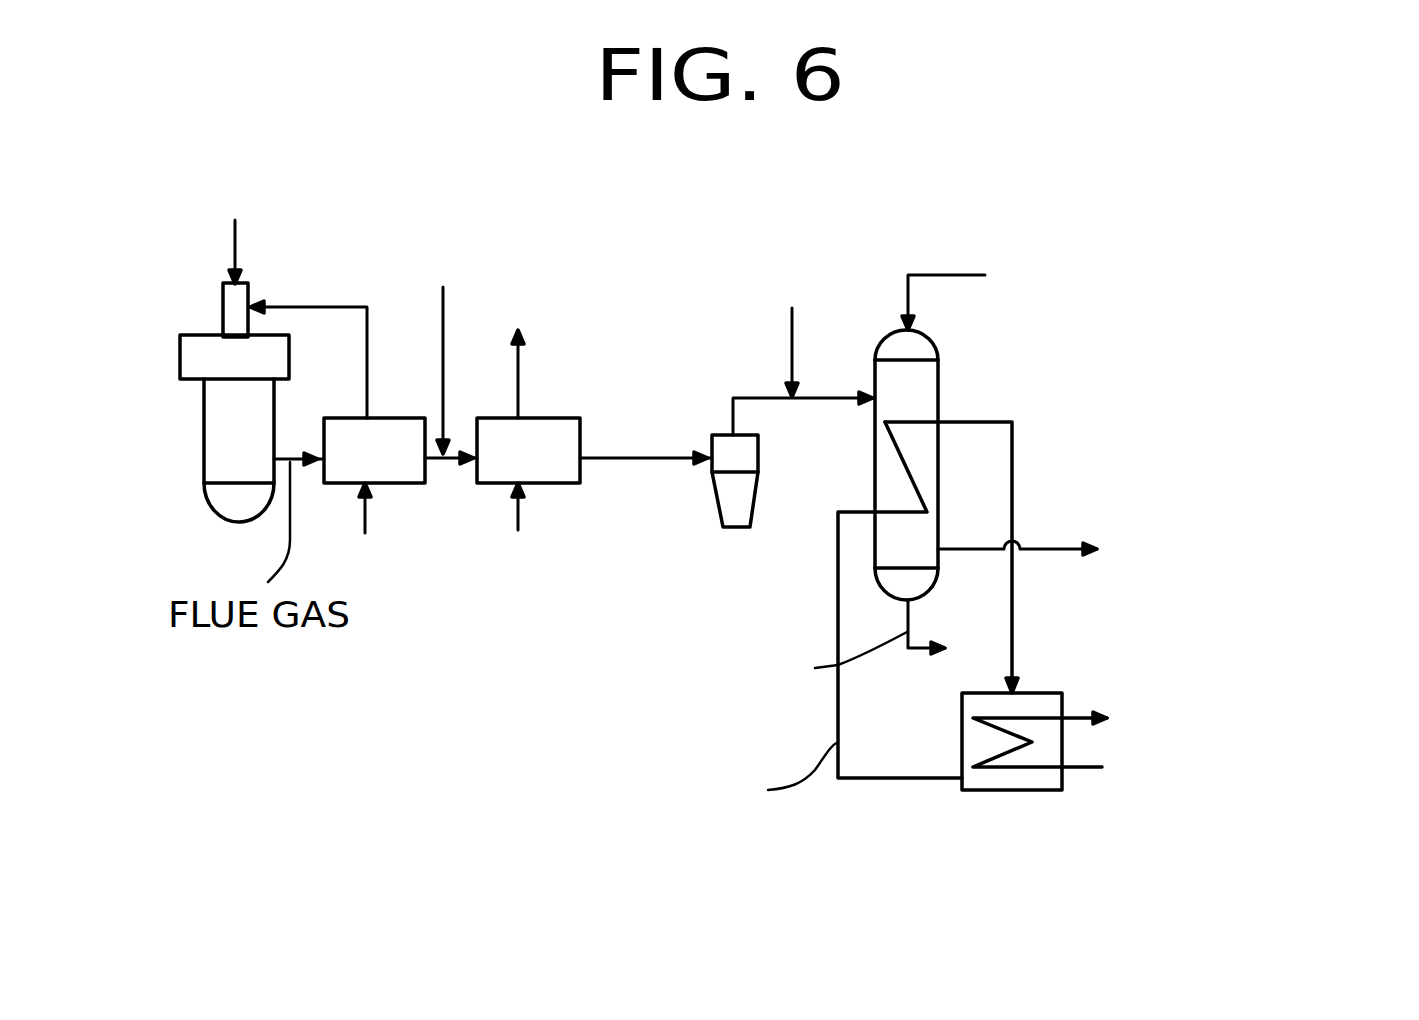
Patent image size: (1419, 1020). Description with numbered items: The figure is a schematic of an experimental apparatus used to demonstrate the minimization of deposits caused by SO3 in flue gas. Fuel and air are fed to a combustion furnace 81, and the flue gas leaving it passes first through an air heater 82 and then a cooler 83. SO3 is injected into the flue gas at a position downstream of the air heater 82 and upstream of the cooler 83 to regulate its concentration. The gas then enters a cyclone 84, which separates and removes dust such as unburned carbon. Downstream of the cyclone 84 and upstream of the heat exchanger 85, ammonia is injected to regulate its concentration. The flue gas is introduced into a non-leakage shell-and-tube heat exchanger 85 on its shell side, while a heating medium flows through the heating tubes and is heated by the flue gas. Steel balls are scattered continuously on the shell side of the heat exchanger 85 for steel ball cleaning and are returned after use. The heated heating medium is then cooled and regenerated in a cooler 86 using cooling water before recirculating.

The combustion furnace 81 is at (204, 430).
The air heater 82 is at (409, 418).
The cooler 83 is at (568, 418).
The cyclone 84 is at (720, 437).
The heat exchanger 85 is at (940, 378).
The cooler 86 is at (1048, 693).